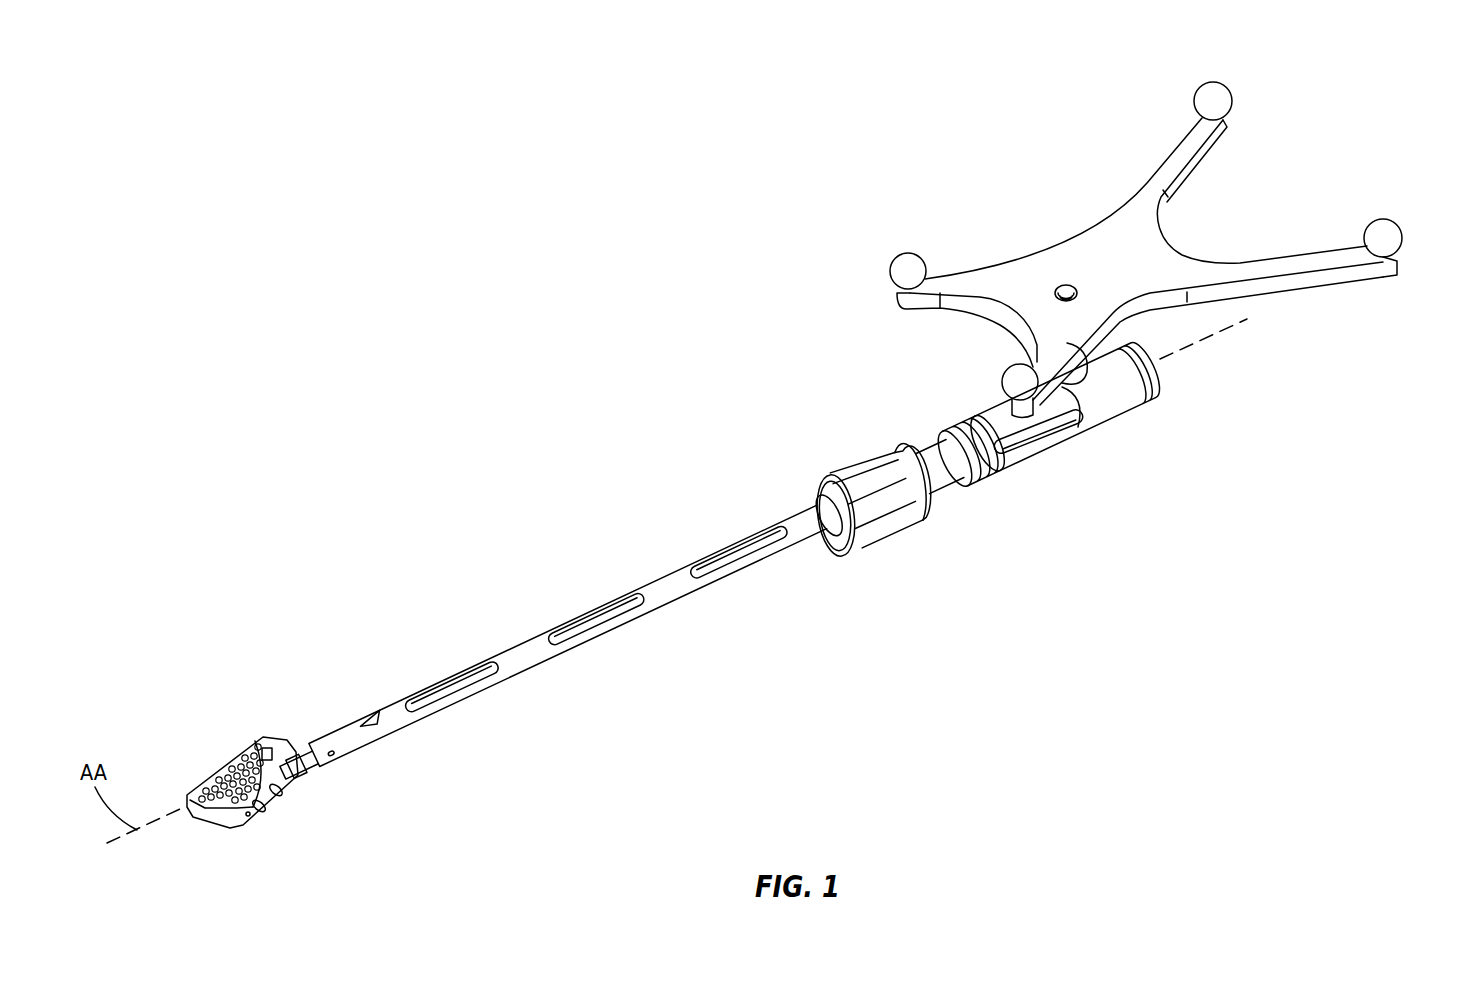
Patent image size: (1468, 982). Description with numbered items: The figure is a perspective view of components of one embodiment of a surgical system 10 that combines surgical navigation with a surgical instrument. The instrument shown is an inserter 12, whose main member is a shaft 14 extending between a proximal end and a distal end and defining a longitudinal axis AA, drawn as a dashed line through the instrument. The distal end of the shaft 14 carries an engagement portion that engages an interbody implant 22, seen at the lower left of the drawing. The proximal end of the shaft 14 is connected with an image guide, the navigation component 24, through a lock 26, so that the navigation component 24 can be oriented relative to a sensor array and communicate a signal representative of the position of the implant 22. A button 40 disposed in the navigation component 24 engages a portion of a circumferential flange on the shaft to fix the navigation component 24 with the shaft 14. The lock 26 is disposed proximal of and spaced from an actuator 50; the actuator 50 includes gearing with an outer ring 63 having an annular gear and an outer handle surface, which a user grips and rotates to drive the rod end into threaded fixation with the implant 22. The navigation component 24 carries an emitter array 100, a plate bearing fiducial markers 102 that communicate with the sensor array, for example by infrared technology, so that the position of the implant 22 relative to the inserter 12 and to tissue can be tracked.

The surgical system 10 is at (171, 206).
The inserter 12 is at (353, 623).
The shaft 14 is at (520, 650).
The interbody implant 22 is at (223, 763).
The navigation component 24 is at (1118, 228).
The lock 26 is at (1032, 494).
The button 40 is at (1030, 443).
The actuator 50 is at (800, 443).
The outer ring 63 is at (880, 523).
The emitter array 100 is at (990, 178).
The fiducial markers 102 is at (1218, 95).